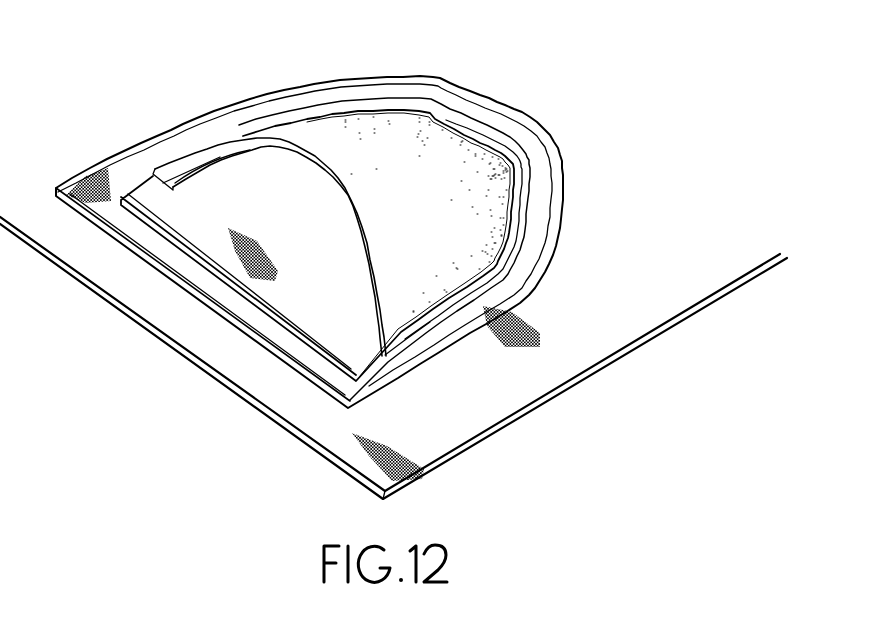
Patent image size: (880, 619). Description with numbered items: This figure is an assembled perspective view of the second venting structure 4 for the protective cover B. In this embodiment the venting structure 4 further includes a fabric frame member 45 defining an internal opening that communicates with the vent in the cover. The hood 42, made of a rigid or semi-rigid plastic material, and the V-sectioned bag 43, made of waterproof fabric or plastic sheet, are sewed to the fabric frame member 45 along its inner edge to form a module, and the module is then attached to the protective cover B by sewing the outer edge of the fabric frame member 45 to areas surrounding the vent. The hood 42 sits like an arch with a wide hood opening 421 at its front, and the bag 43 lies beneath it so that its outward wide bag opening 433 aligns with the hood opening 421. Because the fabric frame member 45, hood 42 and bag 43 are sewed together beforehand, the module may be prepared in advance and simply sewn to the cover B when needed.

The venting structure 4 is at (309, 237).
The hood 42 is at (367, 127).
The V-sectioned bag 43 is at (239, 268).
The fabric frame member 45 is at (263, 335).
The bag opening 433 is at (269, 201).
The hood opening 421 is at (260, 162).
The protective cover B is at (548, 395).